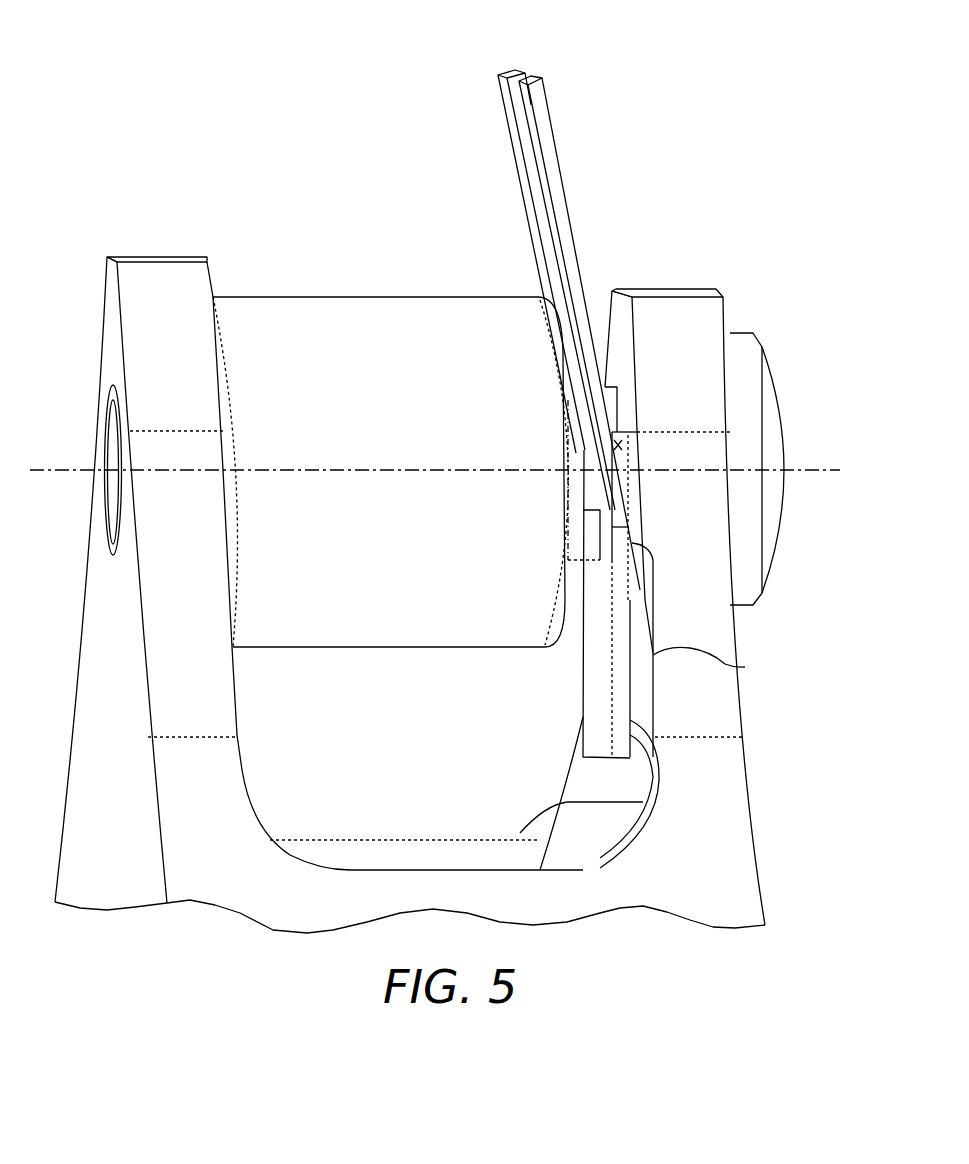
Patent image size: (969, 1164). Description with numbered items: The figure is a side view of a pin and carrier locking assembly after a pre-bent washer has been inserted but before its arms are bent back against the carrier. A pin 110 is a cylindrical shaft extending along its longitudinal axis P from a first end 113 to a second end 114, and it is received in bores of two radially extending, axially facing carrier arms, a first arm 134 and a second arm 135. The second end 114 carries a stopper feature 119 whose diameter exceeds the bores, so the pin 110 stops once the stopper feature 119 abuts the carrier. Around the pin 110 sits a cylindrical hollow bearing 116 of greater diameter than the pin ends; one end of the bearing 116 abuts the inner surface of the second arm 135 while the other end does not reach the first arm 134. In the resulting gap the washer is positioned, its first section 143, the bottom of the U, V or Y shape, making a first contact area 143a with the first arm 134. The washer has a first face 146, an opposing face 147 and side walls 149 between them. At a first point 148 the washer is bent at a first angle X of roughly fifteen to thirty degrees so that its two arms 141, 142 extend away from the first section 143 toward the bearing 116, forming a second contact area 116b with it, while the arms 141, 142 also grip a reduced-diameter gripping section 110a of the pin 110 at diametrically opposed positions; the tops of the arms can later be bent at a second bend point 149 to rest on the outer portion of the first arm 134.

The first end 113 is at (112, 430).
The second arm 135 is at (142, 270).
The bearing 116 is at (268, 305).
The second contact area 116b is at (548, 322).
The arm 141 is at (545, 90).
The arm 142 is at (513, 70).
The first arm 134 is at (680, 294).
The second end 114 is at (752, 343).
The stopper feature 119 is at (780, 390).
The gripping section 110a is at (613, 395).
The pin 110 is at (618, 453).
The first point 148 is at (618, 527).
The second bend point 149 is at (617, 688).
The opposing face 147 is at (595, 737).
The first face 146 is at (645, 745).
The first section 143 is at (620, 753).
The first contact area 143a is at (745, 667).
The first angle X is at (622, 447).
The longitudinal axis P is at (445, 471).